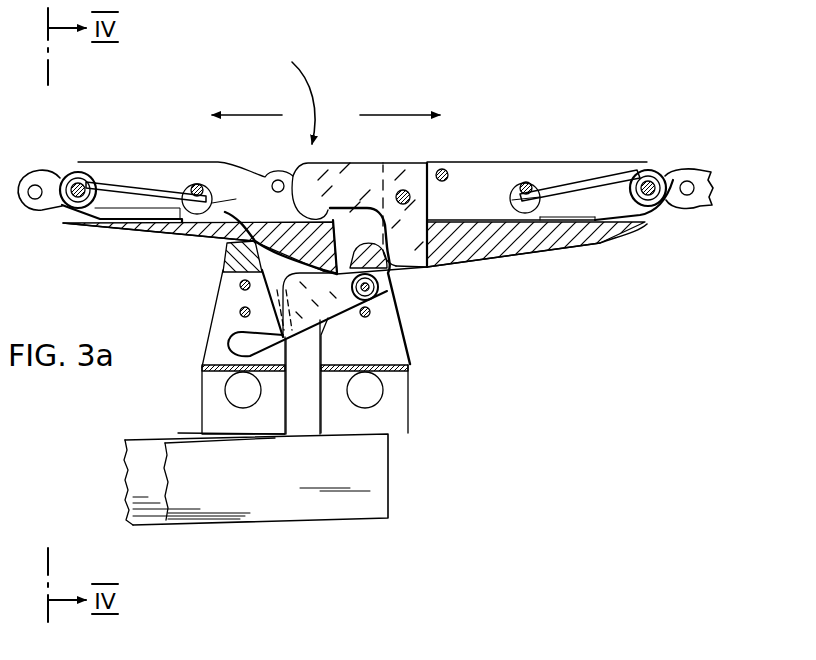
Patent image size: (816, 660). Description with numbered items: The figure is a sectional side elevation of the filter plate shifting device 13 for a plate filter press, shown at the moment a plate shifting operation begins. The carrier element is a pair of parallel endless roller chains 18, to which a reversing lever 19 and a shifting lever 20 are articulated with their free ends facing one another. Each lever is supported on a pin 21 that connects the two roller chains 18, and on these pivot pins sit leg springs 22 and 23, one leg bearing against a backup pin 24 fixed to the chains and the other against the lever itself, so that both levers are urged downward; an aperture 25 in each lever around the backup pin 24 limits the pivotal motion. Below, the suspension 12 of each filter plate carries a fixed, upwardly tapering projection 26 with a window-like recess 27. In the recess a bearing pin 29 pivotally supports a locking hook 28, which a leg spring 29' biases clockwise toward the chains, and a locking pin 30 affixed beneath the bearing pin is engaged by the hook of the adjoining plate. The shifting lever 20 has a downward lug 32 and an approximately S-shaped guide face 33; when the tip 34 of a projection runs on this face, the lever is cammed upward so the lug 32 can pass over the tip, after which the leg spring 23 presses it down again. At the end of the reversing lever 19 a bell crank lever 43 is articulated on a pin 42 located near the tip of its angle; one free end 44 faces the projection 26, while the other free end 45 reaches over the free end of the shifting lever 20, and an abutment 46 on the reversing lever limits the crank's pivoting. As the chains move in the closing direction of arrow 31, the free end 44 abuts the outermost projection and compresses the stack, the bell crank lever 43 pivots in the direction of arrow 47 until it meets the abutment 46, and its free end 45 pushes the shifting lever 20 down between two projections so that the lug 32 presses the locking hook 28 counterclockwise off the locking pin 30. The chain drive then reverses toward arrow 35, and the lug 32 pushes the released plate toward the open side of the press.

The suspension 12 is at (152, 508).
The shifting device 13 is at (462, 124).
The roller chain 18 is at (40, 206).
The reversing lever 19 is at (570, 234).
The shifting lever 20 is at (112, 162).
The pivot pin 21 is at (78, 172).
The leg spring 22 is at (578, 188).
The leg spring 23 is at (153, 182).
The backup pin 24 is at (197, 184).
The aperture 25 is at (236, 199).
The projection 26 is at (338, 414).
The window-like recess 27 is at (400, 337).
The locking hook 28 is at (381, 294).
The bearing pin 29 is at (324, 279).
The leg spring 29' is at (345, 332).
The locking pin 30 is at (240, 313).
The arrow 31 is at (243, 113).
The lug 32 is at (308, 258).
The guide face 33 is at (168, 244).
The tip 34 is at (360, 222).
The arrow 35 is at (398, 113).
The pin 42 is at (411, 197).
The bell crank lever 43 is at (400, 176).
The free end 44 is at (418, 256).
The free end 45 is at (312, 178).
The abutment 46 is at (430, 240).
The arrow 47 is at (290, 93).